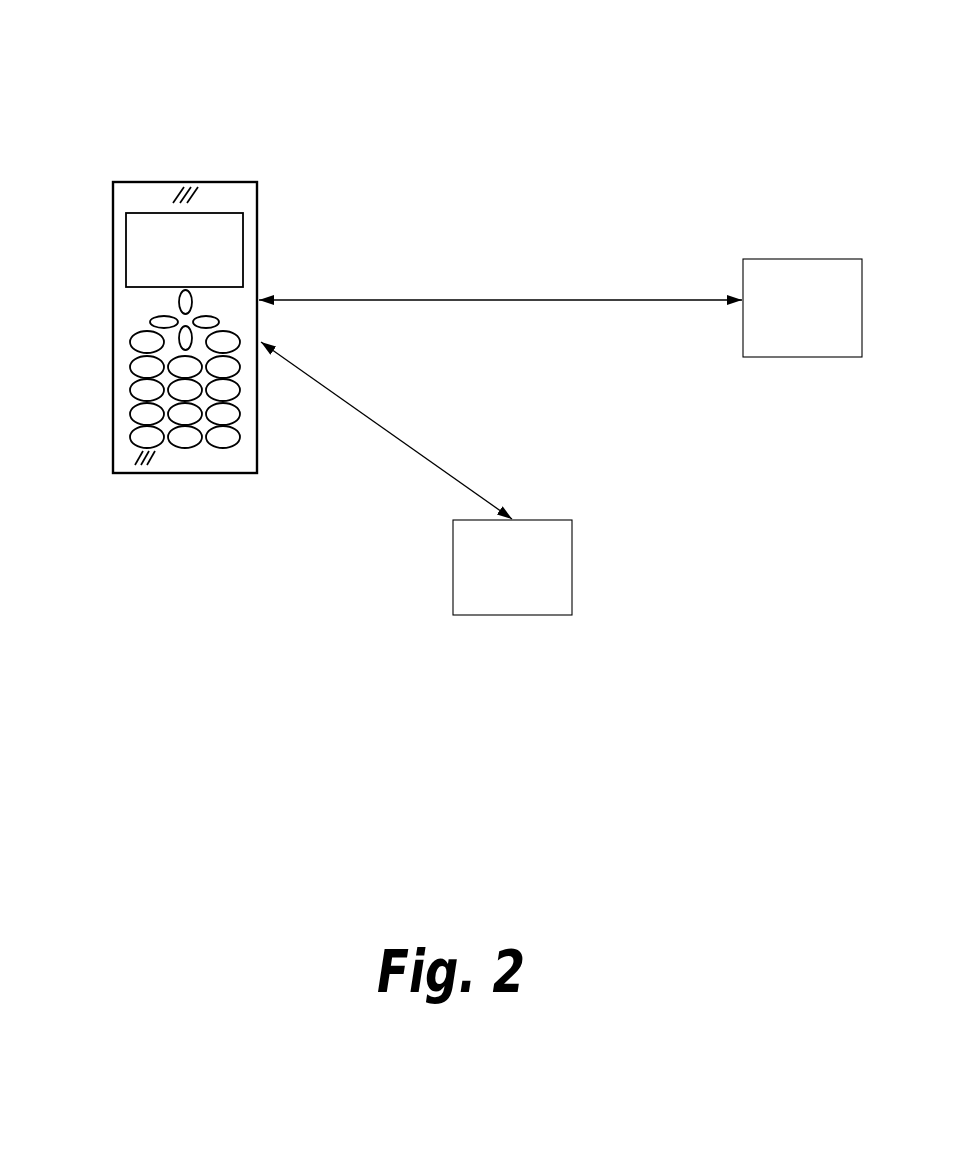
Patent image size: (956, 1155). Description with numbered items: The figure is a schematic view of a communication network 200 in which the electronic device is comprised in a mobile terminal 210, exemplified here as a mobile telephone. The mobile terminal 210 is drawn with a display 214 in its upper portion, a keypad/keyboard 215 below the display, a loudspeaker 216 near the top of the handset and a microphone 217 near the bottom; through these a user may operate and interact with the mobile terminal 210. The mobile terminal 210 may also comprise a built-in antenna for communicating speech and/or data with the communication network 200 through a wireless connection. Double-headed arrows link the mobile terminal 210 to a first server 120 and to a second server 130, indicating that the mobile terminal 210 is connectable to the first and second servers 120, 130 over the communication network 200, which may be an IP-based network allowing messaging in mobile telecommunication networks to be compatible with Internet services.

The communication network 200 is at (622, 51).
The mobile terminal 210 is at (184, 290).
The display 214 is at (137, 244).
The keypad/keyboard 215 is at (137, 367).
The loudspeaker 216 is at (174, 199).
The microphone 217 is at (136, 459).
The first server 120 is at (802, 308).
The second server 130 is at (512, 567).